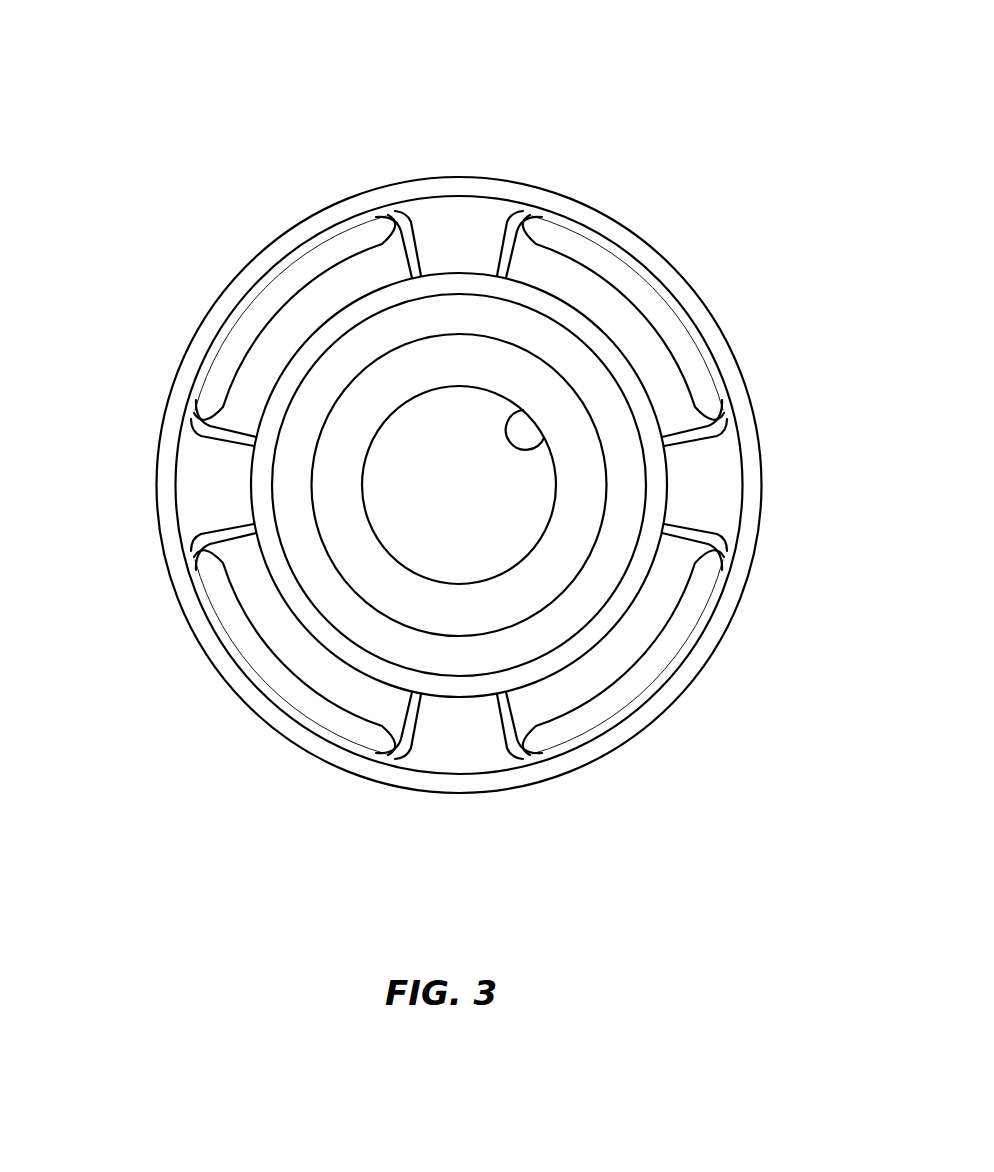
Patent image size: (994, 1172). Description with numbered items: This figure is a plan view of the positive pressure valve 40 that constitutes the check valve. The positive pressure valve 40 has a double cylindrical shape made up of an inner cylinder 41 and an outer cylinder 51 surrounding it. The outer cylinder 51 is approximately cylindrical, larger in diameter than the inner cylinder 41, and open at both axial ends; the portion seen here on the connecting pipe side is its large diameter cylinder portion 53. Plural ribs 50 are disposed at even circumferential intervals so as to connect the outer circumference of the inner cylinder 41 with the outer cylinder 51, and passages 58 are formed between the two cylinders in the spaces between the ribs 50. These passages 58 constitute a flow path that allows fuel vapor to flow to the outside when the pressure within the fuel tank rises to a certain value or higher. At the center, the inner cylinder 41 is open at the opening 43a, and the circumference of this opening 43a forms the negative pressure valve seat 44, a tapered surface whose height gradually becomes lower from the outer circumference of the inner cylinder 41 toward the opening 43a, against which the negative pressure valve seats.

The positive pressure valve 40 is at (464, 449).
The inner cylinder 41 is at (655, 403).
The opening 43a is at (517, 413).
The negative pressure valve seat 44 is at (566, 549).
The ribs 50 is at (460, 225).
The outer cylinder 51 is at (205, 653).
The large diameter cylinder portion 53 is at (333, 753).
The passages 58 is at (572, 275).